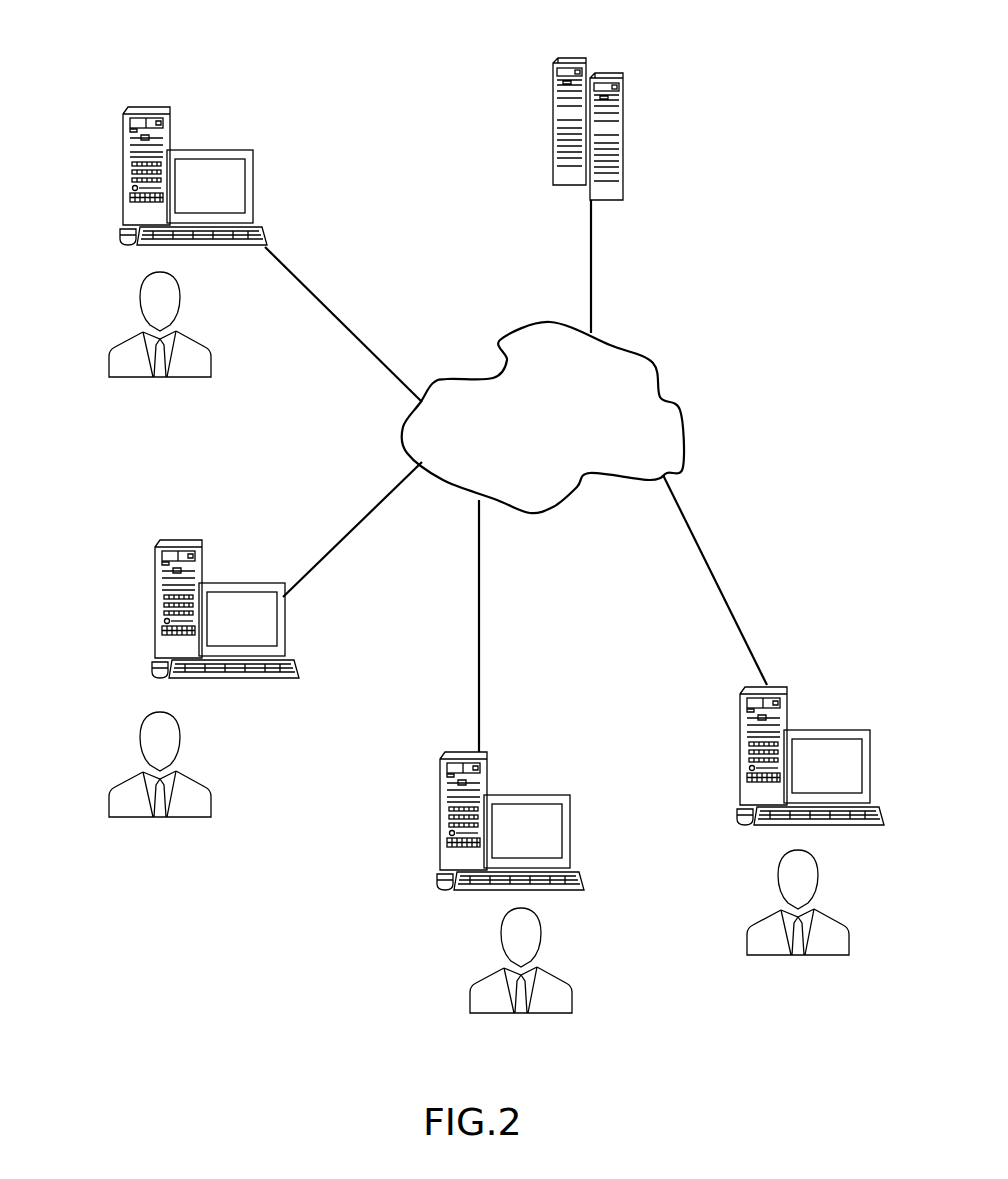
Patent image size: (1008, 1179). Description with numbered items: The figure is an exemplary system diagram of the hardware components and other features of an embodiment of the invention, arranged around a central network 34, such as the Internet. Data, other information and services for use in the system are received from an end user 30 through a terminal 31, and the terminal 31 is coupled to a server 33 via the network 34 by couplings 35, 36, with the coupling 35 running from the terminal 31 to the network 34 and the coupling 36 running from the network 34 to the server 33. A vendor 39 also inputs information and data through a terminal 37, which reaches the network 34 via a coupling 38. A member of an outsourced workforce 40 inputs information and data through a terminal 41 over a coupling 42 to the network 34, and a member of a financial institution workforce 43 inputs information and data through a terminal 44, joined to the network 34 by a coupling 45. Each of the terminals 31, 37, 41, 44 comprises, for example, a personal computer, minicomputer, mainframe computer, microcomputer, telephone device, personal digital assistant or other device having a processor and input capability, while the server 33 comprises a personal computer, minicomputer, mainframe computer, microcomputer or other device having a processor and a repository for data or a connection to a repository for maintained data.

The end user 30 is at (125, 780).
The terminal 31 is at (155, 548).
The server 33 is at (625, 78).
The network 34 is at (503, 338).
The coupling 35 is at (355, 523).
The coupling 36 is at (590, 250).
The terminal 37 is at (448, 752).
The coupling 38 is at (478, 632).
The vendor 39 is at (477, 977).
The member of an outsourced workforce 40 is at (760, 920).
The terminal 41 is at (740, 695).
The coupling 42 is at (715, 578).
The member of a financial institution workforce 43 is at (125, 340).
The terminal 44 is at (127, 172).
The coupling 45 is at (309, 288).